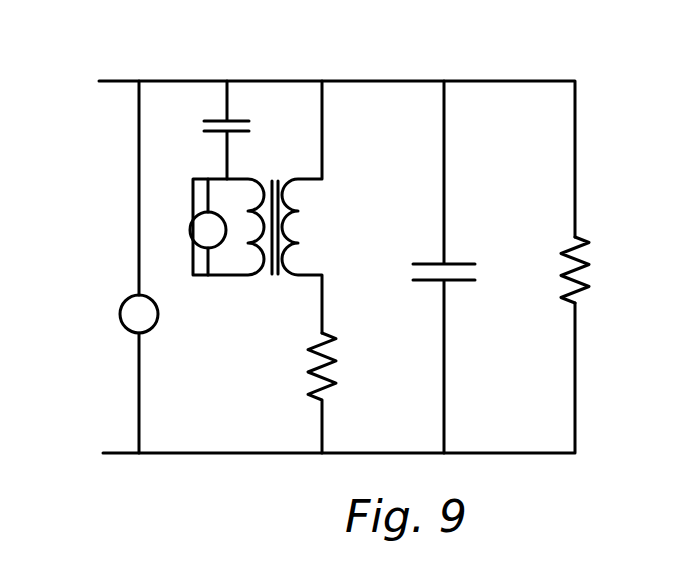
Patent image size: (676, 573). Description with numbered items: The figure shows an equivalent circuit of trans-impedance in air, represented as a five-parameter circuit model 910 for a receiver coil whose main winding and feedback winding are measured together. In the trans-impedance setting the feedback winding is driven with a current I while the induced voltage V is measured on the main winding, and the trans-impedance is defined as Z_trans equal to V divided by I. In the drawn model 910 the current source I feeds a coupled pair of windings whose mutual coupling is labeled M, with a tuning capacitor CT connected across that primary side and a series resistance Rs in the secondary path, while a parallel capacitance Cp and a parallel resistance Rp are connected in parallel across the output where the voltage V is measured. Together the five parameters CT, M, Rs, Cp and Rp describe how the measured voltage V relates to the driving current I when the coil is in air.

The five-parameter circuit model 910 is at (344, 327).
The voltage V is at (139, 267).
The current I is at (208, 227).
The tuning capacitor CT is at (243, 130).
The transformer mutual inductance M is at (257, 207).
The series resistance Rs is at (297, 393).
The parallel capacitance Cp is at (422, 267).
The parallel resistance Rp is at (557, 270).